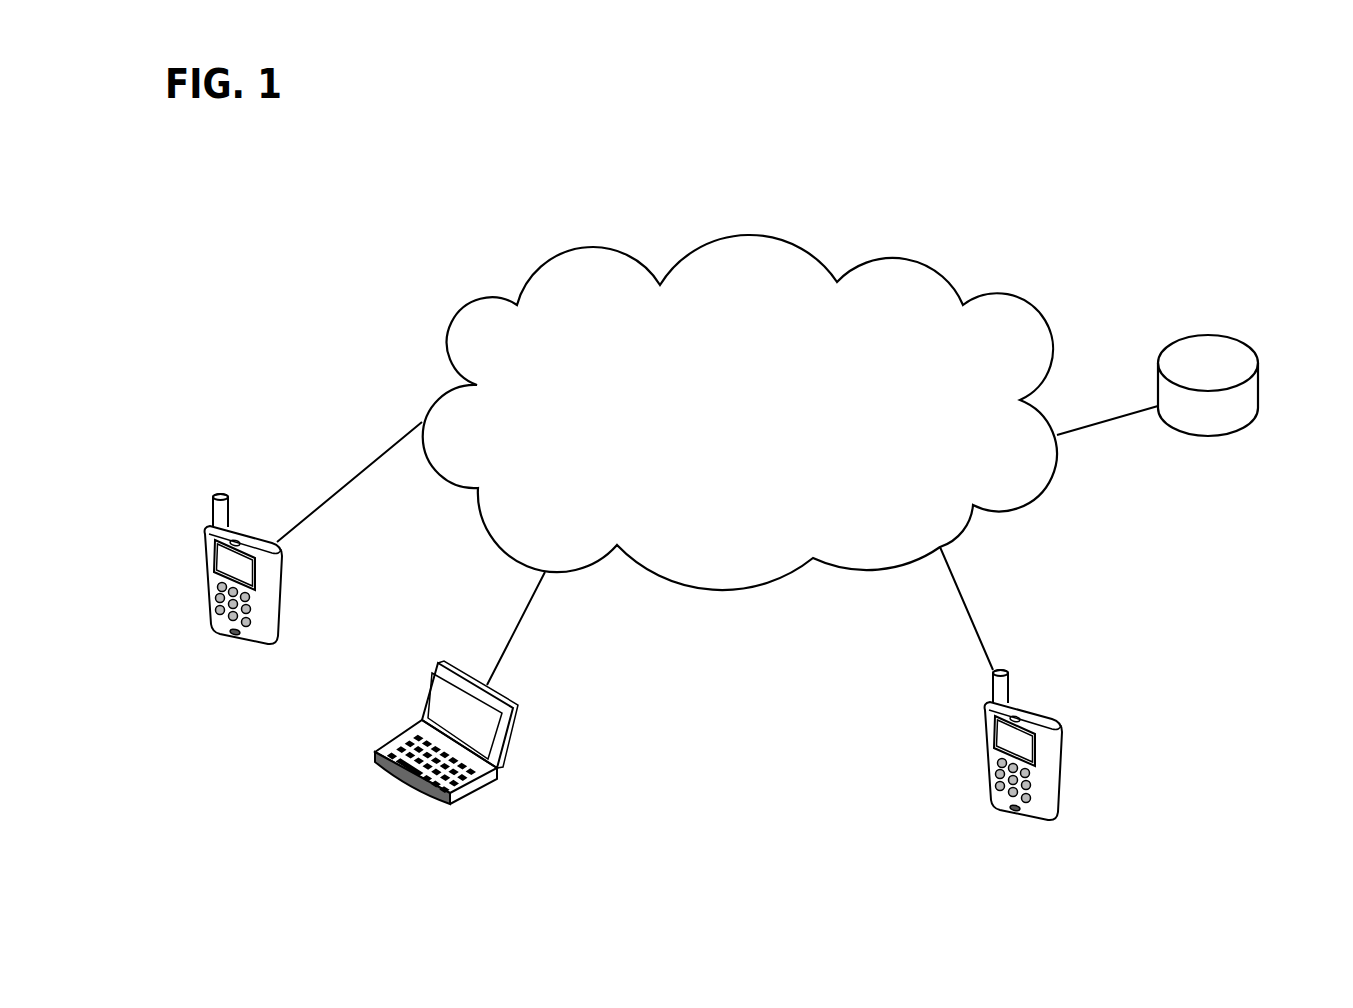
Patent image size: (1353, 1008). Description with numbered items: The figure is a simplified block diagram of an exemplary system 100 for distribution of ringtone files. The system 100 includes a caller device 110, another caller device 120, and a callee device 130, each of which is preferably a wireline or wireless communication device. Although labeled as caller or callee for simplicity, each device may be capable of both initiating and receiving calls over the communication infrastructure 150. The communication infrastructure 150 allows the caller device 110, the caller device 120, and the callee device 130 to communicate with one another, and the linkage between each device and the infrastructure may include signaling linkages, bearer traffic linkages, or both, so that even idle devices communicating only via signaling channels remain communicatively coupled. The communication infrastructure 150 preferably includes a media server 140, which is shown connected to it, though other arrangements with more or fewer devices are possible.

The system 100 is at (432, 144).
The caller device 110 is at (210, 519).
The caller device 120 is at (440, 662).
The callee device 130 is at (989, 702).
The media server 140 is at (1160, 356).
The communication infrastructure 150 is at (549, 257).